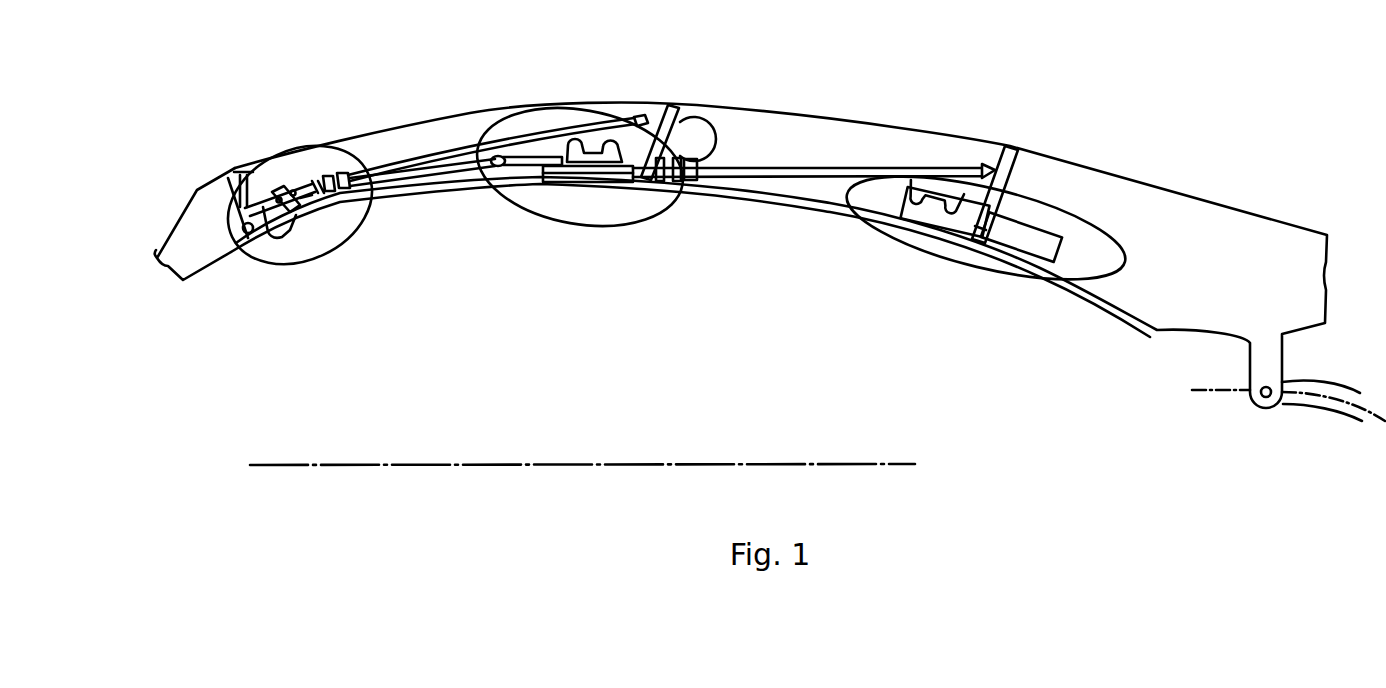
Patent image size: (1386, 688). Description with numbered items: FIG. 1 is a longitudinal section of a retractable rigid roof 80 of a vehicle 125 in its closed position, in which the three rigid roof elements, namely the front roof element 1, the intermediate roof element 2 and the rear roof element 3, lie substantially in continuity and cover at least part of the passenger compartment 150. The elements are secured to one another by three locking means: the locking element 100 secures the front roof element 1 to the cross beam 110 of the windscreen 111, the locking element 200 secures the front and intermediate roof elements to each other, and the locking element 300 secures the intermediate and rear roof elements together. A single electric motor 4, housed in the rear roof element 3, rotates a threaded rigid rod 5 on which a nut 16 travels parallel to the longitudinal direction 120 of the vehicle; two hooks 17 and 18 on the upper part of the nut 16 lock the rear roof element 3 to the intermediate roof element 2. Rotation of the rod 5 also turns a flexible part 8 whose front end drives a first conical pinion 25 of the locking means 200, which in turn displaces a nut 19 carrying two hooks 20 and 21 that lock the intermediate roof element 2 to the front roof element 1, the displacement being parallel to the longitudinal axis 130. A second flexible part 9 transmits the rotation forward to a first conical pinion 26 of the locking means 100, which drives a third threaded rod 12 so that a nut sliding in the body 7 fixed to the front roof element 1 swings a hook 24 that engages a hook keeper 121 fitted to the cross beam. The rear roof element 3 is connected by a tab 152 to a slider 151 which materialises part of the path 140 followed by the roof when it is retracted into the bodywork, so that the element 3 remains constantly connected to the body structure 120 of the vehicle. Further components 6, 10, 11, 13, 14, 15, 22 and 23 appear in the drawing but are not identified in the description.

The front roof element 1 is at (452, 138).
The intermediate roof element 2 is at (783, 138).
The rear roof element 3 is at (1083, 202).
The electric motor 4 is at (1037, 240).
The rigid rod 5 is at (945, 235).
The slider 6 is at (641, 200).
The body 7 is at (301, 240).
The flexible part 8 is at (790, 200).
The second flexible part 9 is at (433, 196).
The main rod 10 is at (840, 166).
The upper rod 11 is at (410, 163).
The third threaded rod 12 is at (243, 176).
The heel bar 13 is at (1008, 145).
The rod end 14 is at (642, 115).
The toe pivot 15 is at (231, 247).
The nut 16 is at (897, 220).
The hook 17 is at (922, 182).
The hook 18 is at (957, 185).
The nut 19 is at (540, 185).
The hook 20 is at (576, 142).
The hook 21 is at (611, 144).
The rod eye 22 is at (497, 170).
The rod sleeve 23 is at (535, 150).
The hook 24 is at (290, 200).
The first conical pinion 25 is at (695, 117).
The first conical pinion 26 is at (330, 178).
The roof 80 is at (1219, 196).
The locking element 100 is at (333, 258).
The cross beam of the windscreen 110 is at (213, 190).
The windscreen 111 is at (180, 231).
The body structure 120 is at (181, 284).
The hook keeper 121 is at (262, 253).
The vehicle 125 is at (756, 83).
The longitudinal axis 130 is at (490, 463).
The path 140 is at (1363, 425).
The passenger compartment 150 is at (545, 370).
The slider 151 is at (1283, 408).
The tab 152 is at (1262, 357).
The locking element 200 is at (575, 226).
The locking element 300 is at (963, 268).